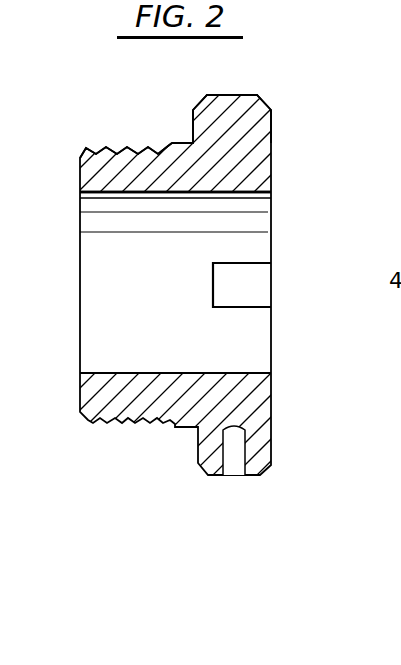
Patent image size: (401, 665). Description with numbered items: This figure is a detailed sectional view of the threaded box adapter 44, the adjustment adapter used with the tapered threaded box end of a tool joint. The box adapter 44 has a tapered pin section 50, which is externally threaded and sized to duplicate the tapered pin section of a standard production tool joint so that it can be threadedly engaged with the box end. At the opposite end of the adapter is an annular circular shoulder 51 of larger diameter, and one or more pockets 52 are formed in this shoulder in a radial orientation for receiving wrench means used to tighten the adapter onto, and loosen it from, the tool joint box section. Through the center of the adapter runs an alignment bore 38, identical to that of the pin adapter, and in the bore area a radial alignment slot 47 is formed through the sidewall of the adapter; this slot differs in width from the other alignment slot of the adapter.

The box adapter 44 is at (287, 160).
The annular circular shoulder 51 is at (237, 93).
The tapered pin section 50 is at (102, 150).
The alignment bore 38 is at (247, 193).
The alignment slot 47 is at (252, 305).
The pocket 52 is at (232, 475).